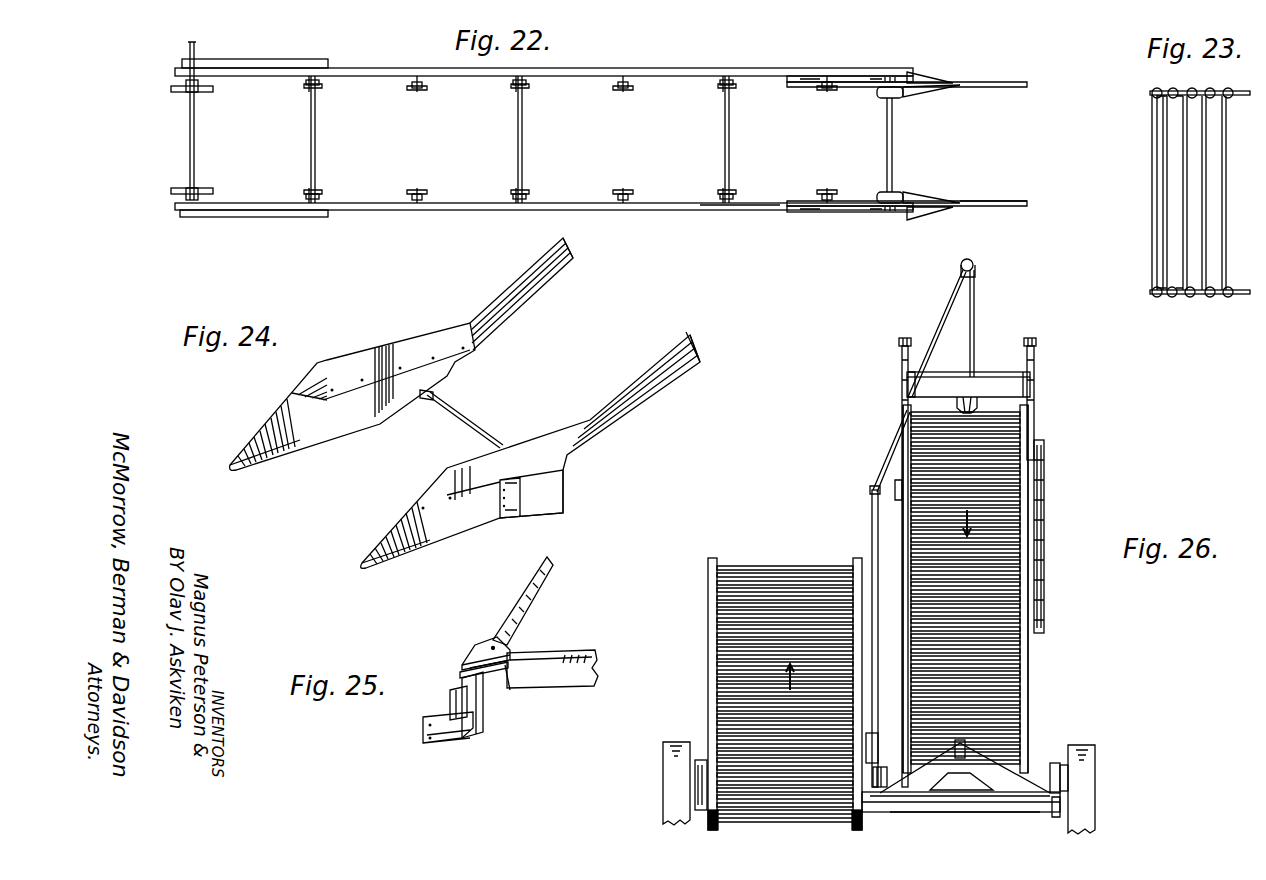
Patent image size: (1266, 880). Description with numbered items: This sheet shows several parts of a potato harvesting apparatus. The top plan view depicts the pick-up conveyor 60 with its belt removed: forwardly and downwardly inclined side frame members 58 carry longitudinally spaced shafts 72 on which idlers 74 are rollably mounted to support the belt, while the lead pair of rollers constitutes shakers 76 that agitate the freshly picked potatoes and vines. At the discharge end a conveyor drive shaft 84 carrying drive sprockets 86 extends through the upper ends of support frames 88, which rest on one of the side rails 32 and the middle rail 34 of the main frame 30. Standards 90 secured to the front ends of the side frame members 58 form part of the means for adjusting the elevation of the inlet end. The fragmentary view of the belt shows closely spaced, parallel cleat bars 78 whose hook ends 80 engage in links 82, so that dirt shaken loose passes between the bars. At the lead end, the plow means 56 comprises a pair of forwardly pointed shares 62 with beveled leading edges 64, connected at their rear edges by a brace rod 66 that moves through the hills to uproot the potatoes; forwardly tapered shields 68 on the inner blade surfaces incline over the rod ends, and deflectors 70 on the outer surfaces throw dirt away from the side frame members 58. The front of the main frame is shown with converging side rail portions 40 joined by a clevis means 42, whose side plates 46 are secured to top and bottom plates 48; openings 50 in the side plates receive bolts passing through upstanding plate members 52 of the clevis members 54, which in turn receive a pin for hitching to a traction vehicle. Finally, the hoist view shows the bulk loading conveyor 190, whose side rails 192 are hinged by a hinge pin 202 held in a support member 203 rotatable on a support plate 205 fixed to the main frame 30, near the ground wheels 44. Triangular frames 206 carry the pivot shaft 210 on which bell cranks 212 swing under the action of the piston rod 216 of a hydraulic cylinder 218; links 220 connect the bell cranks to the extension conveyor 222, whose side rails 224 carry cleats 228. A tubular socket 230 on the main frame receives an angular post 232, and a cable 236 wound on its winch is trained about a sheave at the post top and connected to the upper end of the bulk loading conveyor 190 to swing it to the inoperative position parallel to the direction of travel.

In FIG. 26, the main frame 30 is at (1053, 756).
In FIG. 26, the side rails 32 is at (700, 760).
In FIG. 26, the middle rail 34 is at (880, 767).
In FIG. 25, the side rail portions 40 is at (548, 578).
In FIG. 26, the side rail portions 40 is at (1095, 752).
In FIG. 25, the clevis means 42 is at (476, 643).
In FIG. 26, the ground wheels 44 is at (665, 760).
In FIG. 25, the side plates 46 is at (490, 704).
In FIG. 25, the top and bottom plates 48 is at (475, 655).
In FIG. 25, the openings 50 is at (460, 675).
In FIG. 25, the upstanding plate members 52 is at (450, 707).
In FIG. 25, the clevis members 54 is at (423, 738).
In FIG. 22, the plow means 56 is at (1010, 200).
In FIG. 24, the plow means 56 is at (372, 350).
In FIG. 22, the side frame members 58 is at (665, 72).
In FIG. 24, the side frame members 58 is at (548, 283).
In FIG. 26, the side frame members 58 is at (856, 558).
In FIG. 22, the pick-up conveyor 60 is at (735, 212).
In FIG. 24, the pick-up conveyor 60 is at (640, 426).
In FIG. 26, the pick-up conveyor 60 is at (700, 563).
In FIG. 22, the shares 62 is at (990, 82).
In FIG. 24, the shares 62 is at (294, 442).
In FIG. 24, the beveled leading edges 64 is at (260, 428).
In FIG. 22, the brace rod 66 is at (893, 133).
In FIG. 24, the brace rod 66 is at (463, 415).
In FIG. 22, the shields 68 is at (903, 92).
In FIG. 24, the shields 68 is at (425, 400).
In FIG. 22, the deflectors 70 is at (916, 72).
In FIG. 24, the deflectors 70 is at (563, 503).
In FIG. 22, the shafts 72 is at (310, 137).
In FIG. 22, the idlers 74 is at (305, 89).
In FIG. 22, the shakers 76 is at (412, 93).
In FIG. 23, the cleat bars 78 is at (1185, 208).
In FIG. 26, the cleat bars 78 is at (762, 575).
In FIG. 23, the hook ends 80 is at (1174, 88).
In FIG. 23, the links 82 is at (1172, 100).
In FIG. 22, the conveyor drive shaft 84 is at (189, 131).
In FIG. 22, the drive sprockets 86 is at (171, 89).
In FIG. 22, the support frames 88 is at (272, 64).
In FIG. 22, the standards 90 is at (846, 75).
In FIG. 26, the bulk loading conveyor 190 is at (1036, 660).
In FIG. 26, the side rails 192 is at (902, 658).
In FIG. 26, the hinge pin 202 is at (1000, 748).
In FIG. 26, the support member 203 is at (965, 774).
In FIG. 26, the support plate 205 is at (998, 795).
In FIG. 26, the triangular frames 206 is at (906, 397).
In FIG. 26, the pivot shaft 210 is at (992, 372).
In FIG. 26, the bell cranks 212 is at (904, 337).
In FIG. 26, the piston rod 216 is at (972, 398).
In FIG. 26, the hydraulic cylinder 218 is at (960, 398).
In FIG. 26, the links 220 is at (900, 356).
In FIG. 26, the extension conveyor 222 is at (893, 462).
In FIG. 26, the side rails 224 is at (898, 488).
In FIG. 26, the cleats 228 is at (915, 518).
In FIG. 26, the tubular socket 230 is at (877, 740).
In FIG. 26, the post 232 is at (872, 496).
In FIG. 26, the cable 236 is at (975, 302).